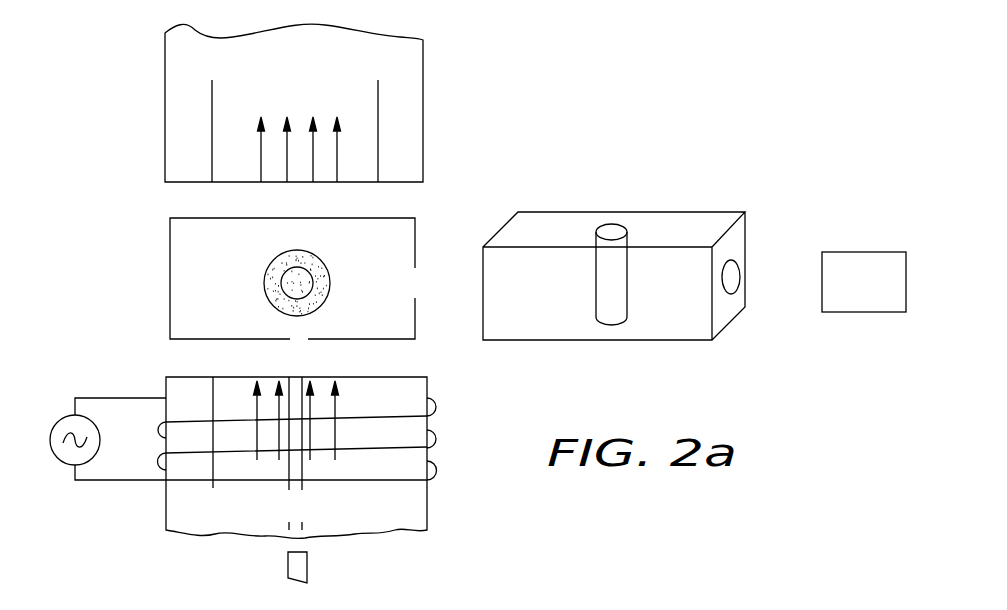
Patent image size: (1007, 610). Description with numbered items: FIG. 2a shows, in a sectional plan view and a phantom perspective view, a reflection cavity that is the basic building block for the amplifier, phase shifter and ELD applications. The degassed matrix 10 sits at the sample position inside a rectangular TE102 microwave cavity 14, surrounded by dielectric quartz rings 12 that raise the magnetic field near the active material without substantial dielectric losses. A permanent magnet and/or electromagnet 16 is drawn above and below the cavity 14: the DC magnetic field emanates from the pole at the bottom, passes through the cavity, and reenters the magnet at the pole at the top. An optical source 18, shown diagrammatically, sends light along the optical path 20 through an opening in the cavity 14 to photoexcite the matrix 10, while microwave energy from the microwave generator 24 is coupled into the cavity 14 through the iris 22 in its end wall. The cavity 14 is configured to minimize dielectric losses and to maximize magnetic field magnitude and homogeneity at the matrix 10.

The degassed matrix 10 is at (281, 290).
The quartz rings 12 is at (328, 260).
The microwave cavity 14 is at (415, 236).
The electromagnet 16 is at (415, 108).
The optical source 18 is at (288, 566).
The optical path 20 is at (294, 343).
The iris 22 is at (731, 296).
The microwave generator 24 is at (861, 312).